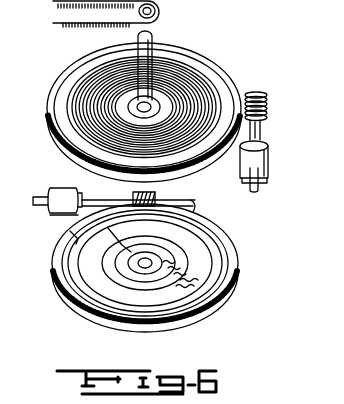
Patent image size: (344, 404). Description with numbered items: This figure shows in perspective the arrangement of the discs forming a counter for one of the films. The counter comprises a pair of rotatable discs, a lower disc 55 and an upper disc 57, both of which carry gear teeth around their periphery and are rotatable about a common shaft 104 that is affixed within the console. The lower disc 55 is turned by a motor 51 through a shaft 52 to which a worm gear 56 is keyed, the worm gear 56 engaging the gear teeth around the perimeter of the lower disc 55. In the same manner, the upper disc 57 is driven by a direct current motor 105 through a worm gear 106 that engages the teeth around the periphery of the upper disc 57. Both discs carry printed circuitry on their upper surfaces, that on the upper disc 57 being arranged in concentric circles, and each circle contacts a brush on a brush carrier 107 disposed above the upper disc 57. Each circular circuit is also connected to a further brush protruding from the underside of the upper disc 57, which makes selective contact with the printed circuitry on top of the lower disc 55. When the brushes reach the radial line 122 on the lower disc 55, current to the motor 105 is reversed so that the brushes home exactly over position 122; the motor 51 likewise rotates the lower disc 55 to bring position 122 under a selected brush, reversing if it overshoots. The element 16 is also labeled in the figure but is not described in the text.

The top disc 16 is at (213, 90).
The motor 51 is at (52, 190).
The drive shaft 52 is at (110, 200).
The bottom disc 55 is at (232, 262).
The worm gear 56 is at (160, 195).
The disc rim flange 57 is at (206, 55).
The center rod 104 is at (152, 33).
The plunger body 105 is at (268, 166).
The coil spring 106 is at (258, 93).
The comb bar 107 is at (160, 7).
The knurled rim 122 is at (197, 312).